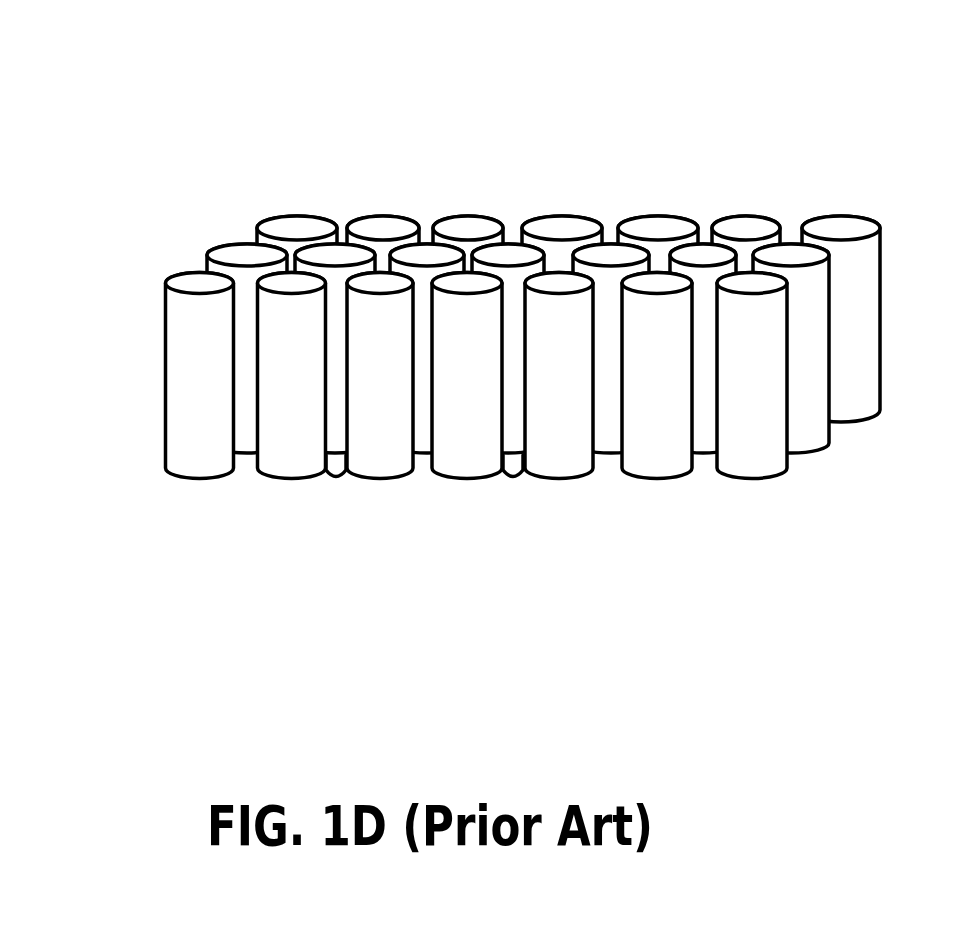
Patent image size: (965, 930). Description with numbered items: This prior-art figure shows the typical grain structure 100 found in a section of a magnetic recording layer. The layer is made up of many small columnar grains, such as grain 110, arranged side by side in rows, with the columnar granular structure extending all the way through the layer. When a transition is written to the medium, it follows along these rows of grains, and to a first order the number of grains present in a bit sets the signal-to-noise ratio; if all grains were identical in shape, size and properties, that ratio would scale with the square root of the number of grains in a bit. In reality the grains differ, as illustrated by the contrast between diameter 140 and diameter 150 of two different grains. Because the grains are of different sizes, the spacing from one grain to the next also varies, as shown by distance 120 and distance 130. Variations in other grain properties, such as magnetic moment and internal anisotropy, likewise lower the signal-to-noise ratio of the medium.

The battery pack / array of cylindrical cells 100 is at (487, 298).
The grain 110 is at (133, 338).
The distance 120 is at (336, 483).
The distance 130 is at (512, 483).
The diameter 140 is at (793, 250).
The diameter 150 is at (202, 287).